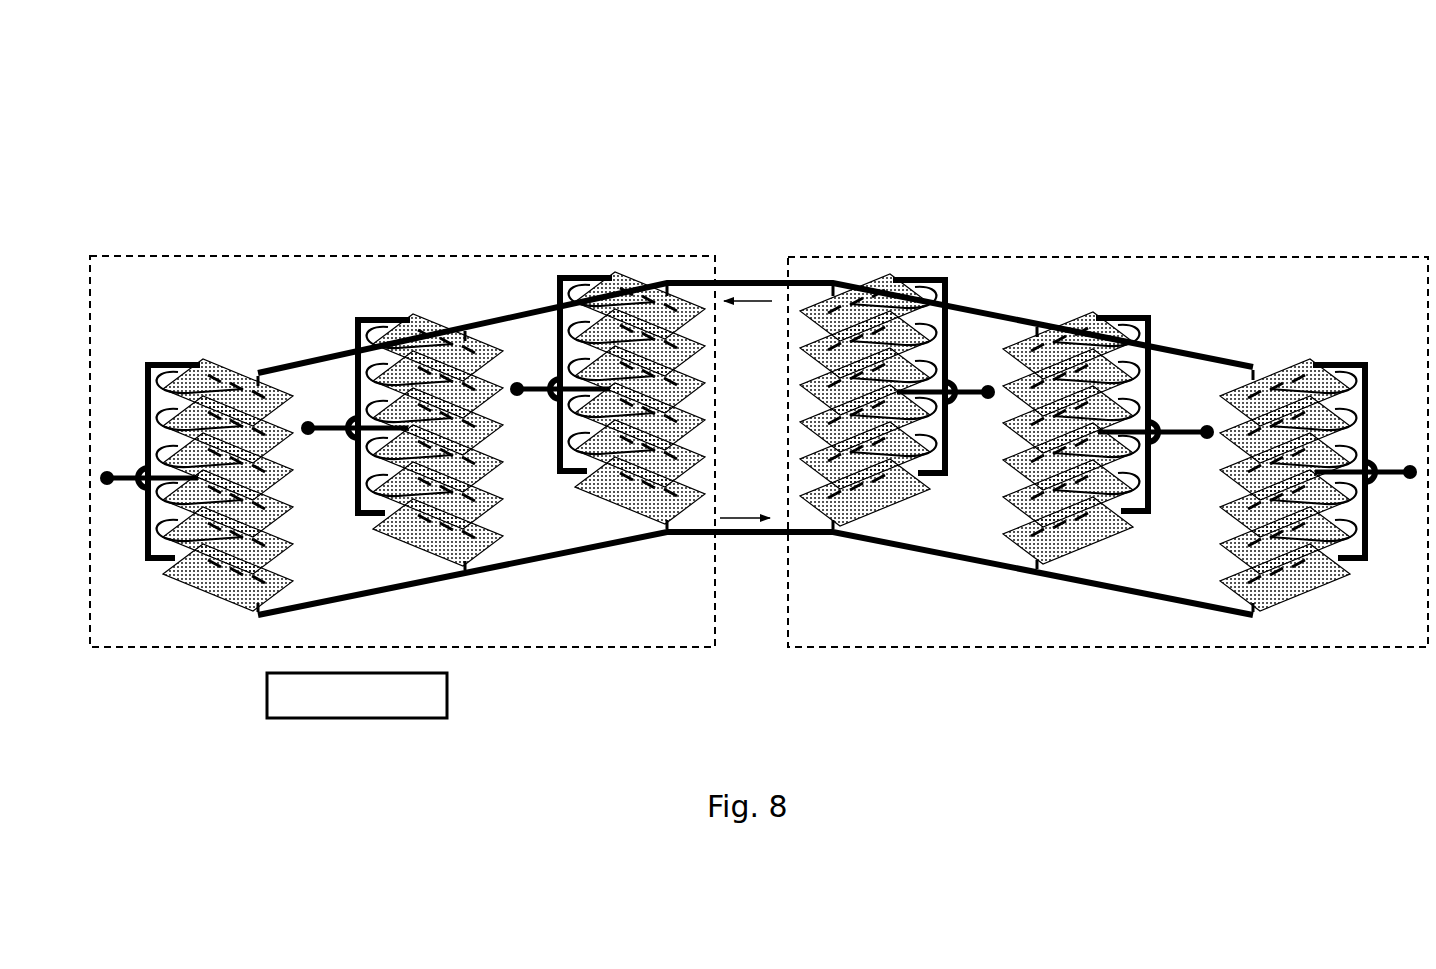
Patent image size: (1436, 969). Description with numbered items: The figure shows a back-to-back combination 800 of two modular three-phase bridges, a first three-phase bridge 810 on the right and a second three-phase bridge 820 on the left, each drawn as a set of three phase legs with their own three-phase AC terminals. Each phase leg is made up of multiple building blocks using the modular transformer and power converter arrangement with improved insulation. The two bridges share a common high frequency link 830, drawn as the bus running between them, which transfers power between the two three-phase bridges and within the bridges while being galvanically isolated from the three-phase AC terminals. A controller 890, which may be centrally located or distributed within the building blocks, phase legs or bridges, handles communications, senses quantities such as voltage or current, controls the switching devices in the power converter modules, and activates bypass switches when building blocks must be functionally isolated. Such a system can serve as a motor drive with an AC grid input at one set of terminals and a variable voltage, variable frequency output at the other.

The back-to-back combination 800 is at (817, 142).
The three-phase bridge 810 is at (1240, 258).
The three-phase bridge 820 is at (355, 255).
The high frequency link 830 is at (752, 277).
The controller 890 is at (265, 693).